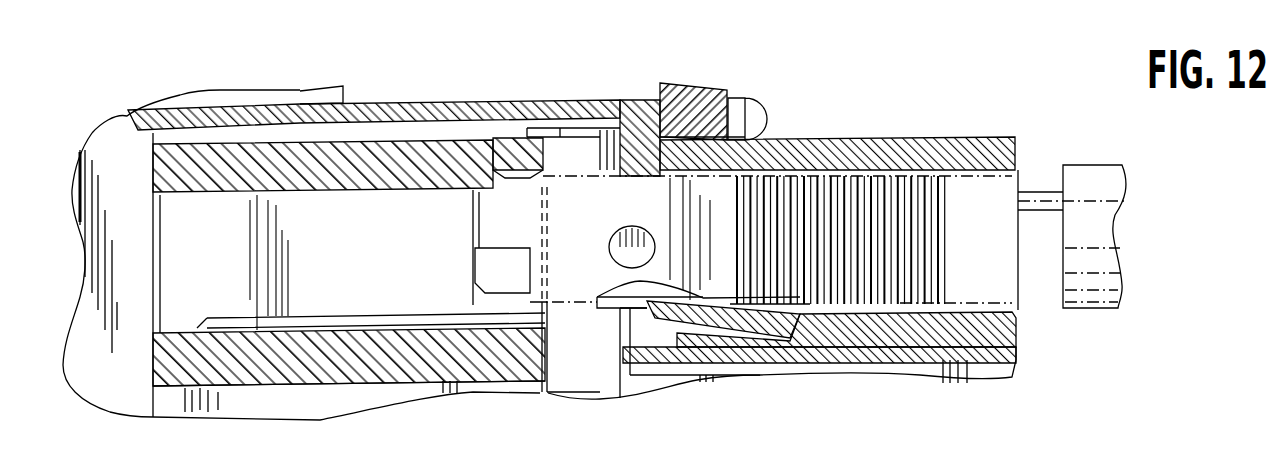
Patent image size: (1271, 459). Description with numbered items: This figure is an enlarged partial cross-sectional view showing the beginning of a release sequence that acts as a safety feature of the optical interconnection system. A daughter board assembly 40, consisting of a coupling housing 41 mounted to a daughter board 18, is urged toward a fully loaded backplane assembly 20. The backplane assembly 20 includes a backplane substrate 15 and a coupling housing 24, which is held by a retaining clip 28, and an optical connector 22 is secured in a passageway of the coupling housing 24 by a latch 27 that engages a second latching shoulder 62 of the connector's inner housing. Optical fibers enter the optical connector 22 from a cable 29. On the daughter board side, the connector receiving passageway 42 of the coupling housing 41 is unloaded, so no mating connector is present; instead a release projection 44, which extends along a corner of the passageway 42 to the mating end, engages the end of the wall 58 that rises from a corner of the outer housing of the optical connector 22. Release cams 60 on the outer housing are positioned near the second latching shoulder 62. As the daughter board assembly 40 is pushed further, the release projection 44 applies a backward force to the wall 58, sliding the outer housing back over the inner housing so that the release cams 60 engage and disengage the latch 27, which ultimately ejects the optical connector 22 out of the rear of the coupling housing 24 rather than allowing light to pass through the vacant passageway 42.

The daughter board 18 is at (92, 133).
The daughter board assembly 40 is at (229, 86).
The coupling housing 41 is at (300, 142).
The wall 58 is at (455, 143).
The backplane substrate 15 is at (683, 83).
The release projection 44 is at (546, 153).
The retaining clip 28 is at (770, 100).
The coupling housing 24 is at (837, 140).
The backplane assembly 20 is at (911, 133).
The optical connector 22 is at (1019, 172).
The cable 29 is at (1092, 310).
The latch 27 is at (713, 325).
The second latching shoulder 62 is at (650, 301).
The release cams 60 is at (618, 308).
The connector receiving passageway 42 is at (160, 242).